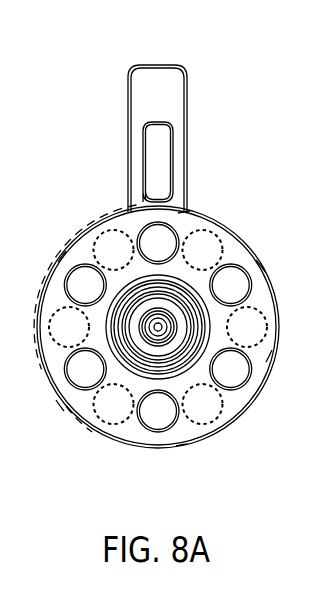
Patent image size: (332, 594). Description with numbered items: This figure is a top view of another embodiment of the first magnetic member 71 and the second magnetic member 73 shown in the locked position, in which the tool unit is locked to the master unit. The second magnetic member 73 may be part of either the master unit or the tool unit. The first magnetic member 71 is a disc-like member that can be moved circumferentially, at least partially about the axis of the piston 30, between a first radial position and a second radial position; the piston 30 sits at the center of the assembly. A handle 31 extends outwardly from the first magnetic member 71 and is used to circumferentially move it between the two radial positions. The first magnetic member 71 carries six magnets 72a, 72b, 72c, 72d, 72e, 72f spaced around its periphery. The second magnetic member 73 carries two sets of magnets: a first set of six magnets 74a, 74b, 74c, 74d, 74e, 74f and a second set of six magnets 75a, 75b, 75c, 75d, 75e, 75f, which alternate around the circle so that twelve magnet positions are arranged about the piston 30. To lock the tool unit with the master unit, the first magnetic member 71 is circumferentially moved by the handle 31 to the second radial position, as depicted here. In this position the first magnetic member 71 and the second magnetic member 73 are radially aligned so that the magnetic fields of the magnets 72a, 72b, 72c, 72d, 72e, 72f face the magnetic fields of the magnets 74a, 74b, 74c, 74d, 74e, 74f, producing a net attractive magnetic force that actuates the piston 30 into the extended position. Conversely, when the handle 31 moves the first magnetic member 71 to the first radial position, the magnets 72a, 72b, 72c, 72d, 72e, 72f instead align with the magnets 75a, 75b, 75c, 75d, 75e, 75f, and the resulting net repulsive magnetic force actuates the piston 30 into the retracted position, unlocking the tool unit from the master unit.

The piston 30 is at (145, 41).
The handle 31 is at (187, 148).
The first magnetic member 71 is at (80, 410).
The magnet 72a is at (187, 218).
The magnet 72b is at (250, 273).
The magnet 72c is at (249, 357).
The magnet 72d is at (183, 438).
The magnet 72e is at (58, 390).
The magnet 72f is at (63, 262).
The second magnetic member 73 is at (117, 442).
The magnet 74a is at (148, 250).
The magnet 74b is at (241, 292).
The magnet 74c is at (241, 376).
The magnet 74d is at (148, 418).
The magnet 74e is at (75, 376).
The magnet 74f is at (75, 292).
The magnet 75a is at (124, 257).
The magnet 75b is at (192, 257).
The magnet 75c is at (237, 334).
The magnet 75d is at (192, 411).
The magnet 75e is at (124, 411).
The magnet 75f is at (59, 334).